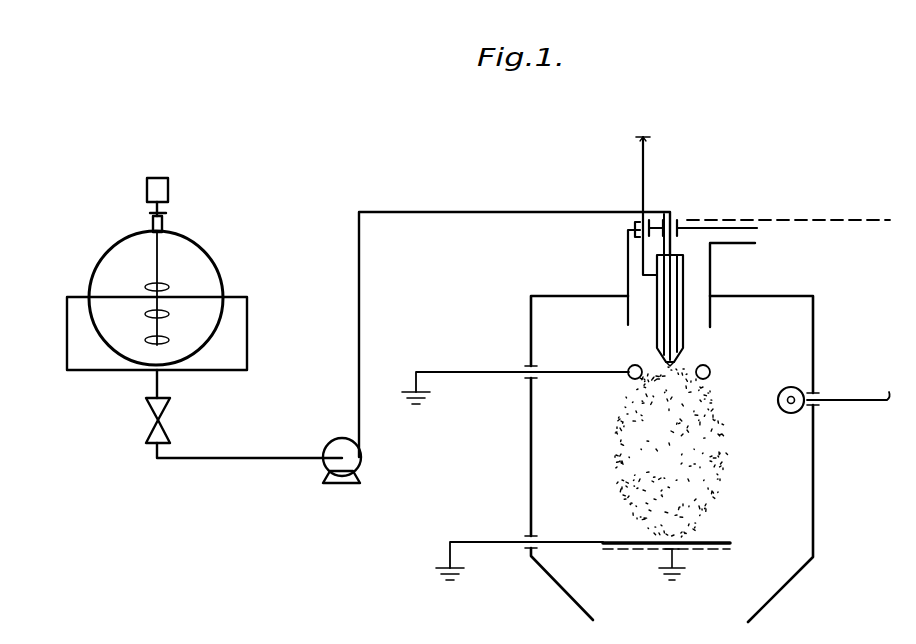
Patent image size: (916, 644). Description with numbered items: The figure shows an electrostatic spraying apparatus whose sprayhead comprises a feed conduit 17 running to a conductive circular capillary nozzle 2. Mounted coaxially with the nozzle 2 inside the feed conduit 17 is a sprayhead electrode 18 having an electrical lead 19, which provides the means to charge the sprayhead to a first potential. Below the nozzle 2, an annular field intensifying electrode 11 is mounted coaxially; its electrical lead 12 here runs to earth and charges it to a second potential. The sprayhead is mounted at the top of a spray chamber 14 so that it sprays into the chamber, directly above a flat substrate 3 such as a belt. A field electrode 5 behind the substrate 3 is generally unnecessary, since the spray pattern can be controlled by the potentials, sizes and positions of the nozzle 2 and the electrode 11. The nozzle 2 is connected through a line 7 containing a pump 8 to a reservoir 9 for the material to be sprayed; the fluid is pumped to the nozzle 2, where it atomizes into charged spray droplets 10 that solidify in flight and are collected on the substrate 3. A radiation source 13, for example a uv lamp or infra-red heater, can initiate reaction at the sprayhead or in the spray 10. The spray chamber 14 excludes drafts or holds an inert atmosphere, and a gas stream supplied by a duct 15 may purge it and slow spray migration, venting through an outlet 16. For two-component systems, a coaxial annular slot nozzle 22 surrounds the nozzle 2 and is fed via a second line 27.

The capillary nozzle 2 is at (660, 358).
The substrate 3 is at (728, 543).
The field electrode 5 is at (705, 552).
The line 7 is at (398, 212).
The pump 8 is at (340, 447).
The reservoir 9 is at (222, 270).
The spray droplets 10 is at (650, 455).
The annular field intensifying electrode 11 is at (629, 378).
The electrical lead 12 is at (485, 370).
The radiation source 13 is at (802, 388).
The spray chamber 14 is at (530, 416).
The duct 15 is at (757, 236).
The outlet 16 is at (675, 626).
The feed conduit 17 is at (667, 322).
The sprayhead electrode 18 is at (670, 287).
The electrical lead 19 is at (645, 153).
The annular slot nozzle 22 is at (684, 350).
The second line 27 is at (787, 219).